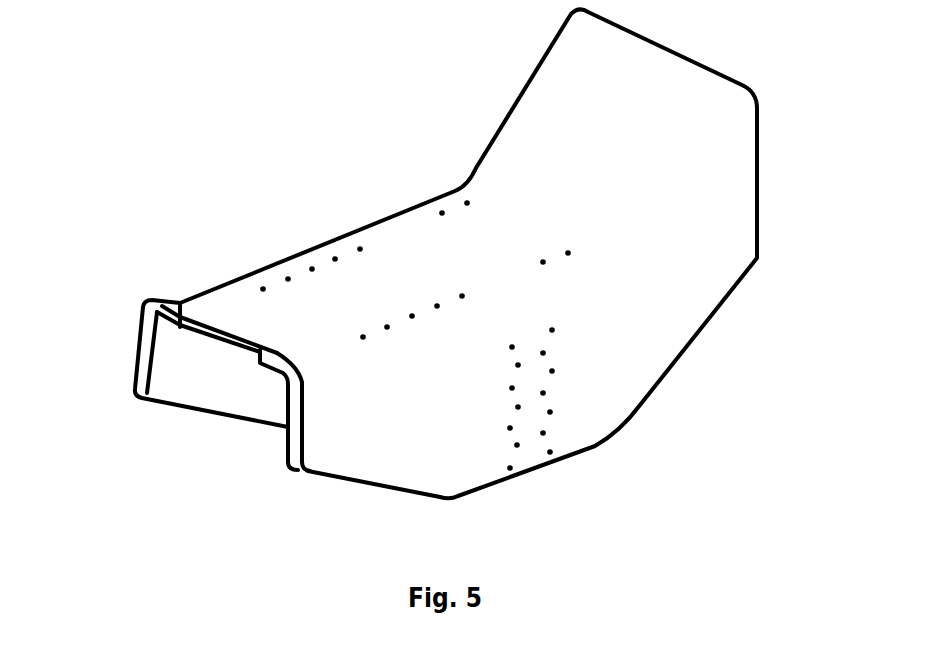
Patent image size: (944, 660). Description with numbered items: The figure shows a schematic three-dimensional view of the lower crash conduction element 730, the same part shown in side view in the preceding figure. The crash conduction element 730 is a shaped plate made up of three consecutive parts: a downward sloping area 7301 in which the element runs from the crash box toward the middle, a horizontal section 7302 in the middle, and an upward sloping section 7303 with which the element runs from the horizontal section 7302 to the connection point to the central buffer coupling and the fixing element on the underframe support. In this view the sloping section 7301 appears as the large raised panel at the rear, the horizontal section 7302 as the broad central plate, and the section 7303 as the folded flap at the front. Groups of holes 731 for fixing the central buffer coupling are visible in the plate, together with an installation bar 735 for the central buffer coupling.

The lower crash conduction element 730 is at (427, 253).
The section of the crash conduction element from the crash box to the horizontal sec 7301 is at (570, 100).
The horizontal section 7302 is at (437, 252).
The section of the crash conduction element from the horizontal section to the fixin 7303 is at (167, 350).
The holes for fixing the central buffer coupling 731 is at (546, 433).
The installation bar for central buffer coupling 735 is at (465, 297).